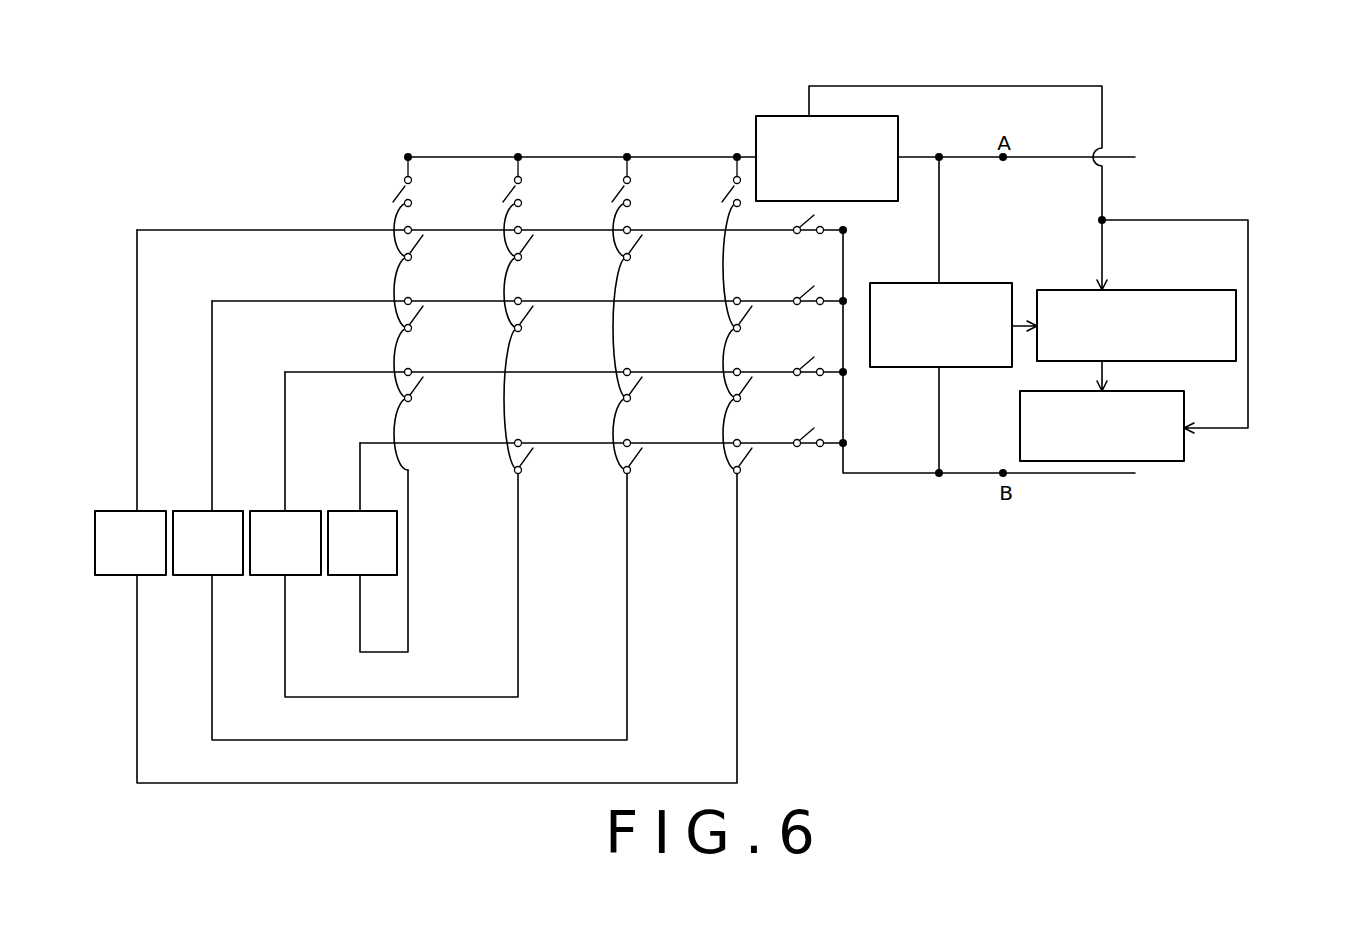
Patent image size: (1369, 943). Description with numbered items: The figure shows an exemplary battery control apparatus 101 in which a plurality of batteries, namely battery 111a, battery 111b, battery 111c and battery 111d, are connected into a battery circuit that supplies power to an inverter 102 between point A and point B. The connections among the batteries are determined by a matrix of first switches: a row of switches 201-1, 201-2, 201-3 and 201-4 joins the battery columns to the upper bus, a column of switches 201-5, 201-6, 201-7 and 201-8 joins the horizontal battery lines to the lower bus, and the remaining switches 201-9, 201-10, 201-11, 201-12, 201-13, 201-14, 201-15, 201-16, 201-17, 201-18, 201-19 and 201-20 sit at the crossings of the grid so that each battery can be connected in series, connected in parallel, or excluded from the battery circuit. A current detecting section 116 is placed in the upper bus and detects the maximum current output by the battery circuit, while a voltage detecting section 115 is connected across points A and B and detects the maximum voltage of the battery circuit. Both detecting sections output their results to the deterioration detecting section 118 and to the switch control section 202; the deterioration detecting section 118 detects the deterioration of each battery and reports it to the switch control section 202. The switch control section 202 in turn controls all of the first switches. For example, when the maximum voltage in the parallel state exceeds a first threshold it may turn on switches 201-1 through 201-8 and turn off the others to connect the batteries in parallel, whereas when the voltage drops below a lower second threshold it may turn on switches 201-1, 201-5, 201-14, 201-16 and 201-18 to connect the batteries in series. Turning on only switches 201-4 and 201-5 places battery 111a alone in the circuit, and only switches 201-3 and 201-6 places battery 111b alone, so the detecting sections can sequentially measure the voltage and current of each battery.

The battery control apparatus 101 is at (998, 49).
The inverter 102 is at (1233, 317).
The battery 111a is at (150, 511).
The battery 111b is at (225, 511).
The battery 111c is at (297, 511).
The battery 111d is at (352, 511).
The voltage detecting section 115 is at (967, 282).
The current detecting section 116 is at (898, 132).
The deterioration detecting section 118 is at (1182, 290).
The switch control section 202 is at (1167, 384).
The first switch 201-1 is at (397, 187).
The first switch 201-2 is at (507, 187).
The first switch 201-3 is at (616, 187).
The first switch 201-4 is at (726, 187).
The first switch 201-5 is at (808, 220).
The first switch 201-6 is at (812, 288).
The first switch 201-7 is at (812, 361).
The first switch 201-8 is at (812, 432).
The first switch 201-9 is at (447, 250).
The first switch 201-10 is at (557, 250).
The first switch 201-11 is at (666, 250).
The first switch 201-12 is at (447, 321).
The first switch 201-13 is at (557, 321).
The first switch 201-14 is at (776, 321).
The first switch 201-15 is at (447, 392).
The first switch 201-16 is at (666, 392).
The first switch 201-17 is at (776, 392).
The first switch 201-18 is at (557, 463).
The first switch 201-19 is at (666, 463).
The first switch 201-20 is at (776, 463).